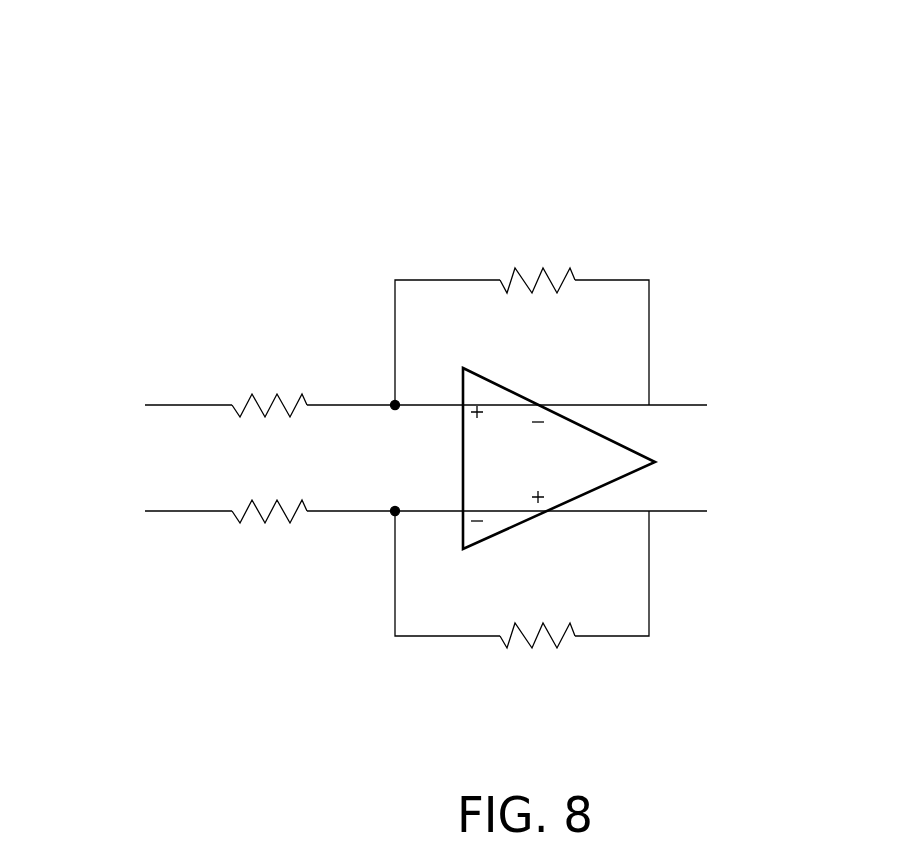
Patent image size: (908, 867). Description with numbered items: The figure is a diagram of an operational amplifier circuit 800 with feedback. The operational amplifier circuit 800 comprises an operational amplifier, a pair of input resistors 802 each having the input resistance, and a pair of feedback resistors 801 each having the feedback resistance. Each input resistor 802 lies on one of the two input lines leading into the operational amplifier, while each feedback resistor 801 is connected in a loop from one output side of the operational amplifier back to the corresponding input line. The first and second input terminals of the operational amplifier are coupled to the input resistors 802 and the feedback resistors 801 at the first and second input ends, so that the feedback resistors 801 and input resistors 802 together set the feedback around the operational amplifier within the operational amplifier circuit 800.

The operational amplifier circuit 800 is at (733, 157).
The feedback resistors 801 is at (571, 269).
The input resistors 802 is at (248, 402).